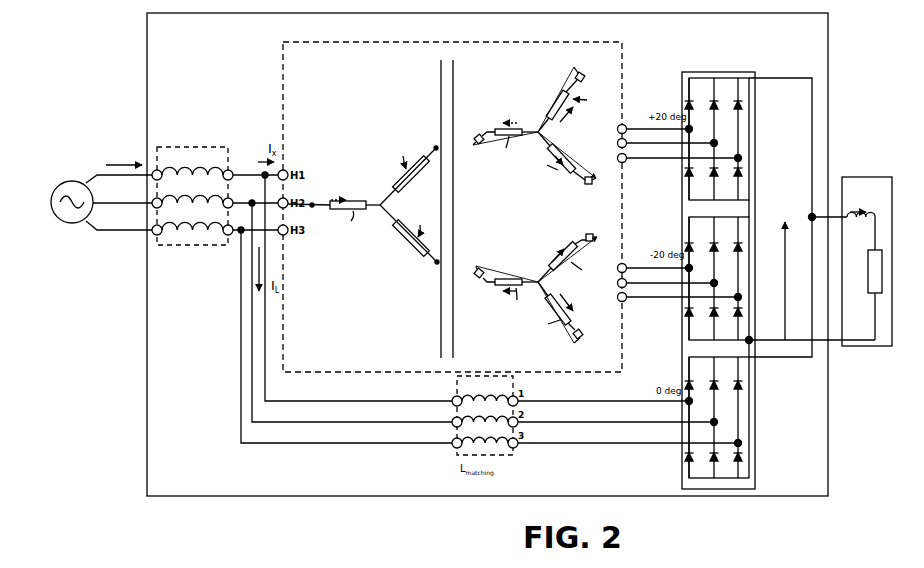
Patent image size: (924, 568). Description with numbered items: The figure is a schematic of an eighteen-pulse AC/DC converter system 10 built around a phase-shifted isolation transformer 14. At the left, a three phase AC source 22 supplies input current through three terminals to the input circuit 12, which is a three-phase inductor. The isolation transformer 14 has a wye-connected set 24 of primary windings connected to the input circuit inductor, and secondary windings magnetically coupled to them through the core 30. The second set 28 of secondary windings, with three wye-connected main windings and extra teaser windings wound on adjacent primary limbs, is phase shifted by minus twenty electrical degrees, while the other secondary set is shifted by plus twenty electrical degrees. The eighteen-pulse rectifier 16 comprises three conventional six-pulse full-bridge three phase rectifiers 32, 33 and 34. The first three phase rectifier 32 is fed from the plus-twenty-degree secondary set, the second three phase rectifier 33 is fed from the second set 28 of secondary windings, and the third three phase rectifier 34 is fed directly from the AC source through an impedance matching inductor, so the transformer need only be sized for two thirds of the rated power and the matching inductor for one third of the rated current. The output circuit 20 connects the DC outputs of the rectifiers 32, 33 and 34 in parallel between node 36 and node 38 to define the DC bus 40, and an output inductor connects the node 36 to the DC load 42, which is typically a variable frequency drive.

The AC/DC converter system 10 is at (402, 498).
The input circuit 12 is at (200, 247).
The isolation transformer 14 is at (418, 40).
The eighteen-pulse rectifier 16 is at (725, 72).
The output circuit 20 is at (876, 250).
The three phase AC source 22 is at (61, 181).
The set of primary windings 24 is at (381, 185).
The second set of secondary windings 28 is at (531, 121).
The core 30 is at (440, 97).
The first three phase rectifier 32 is at (741, 138).
The second three phase rectifier 33 is at (741, 273).
The third three phase rectifier 34 is at (741, 418).
The node 36 is at (809, 221).
The node 38 is at (753, 338).
The DC bus 40 is at (784, 281).
The DC load 42 is at (888, 272).